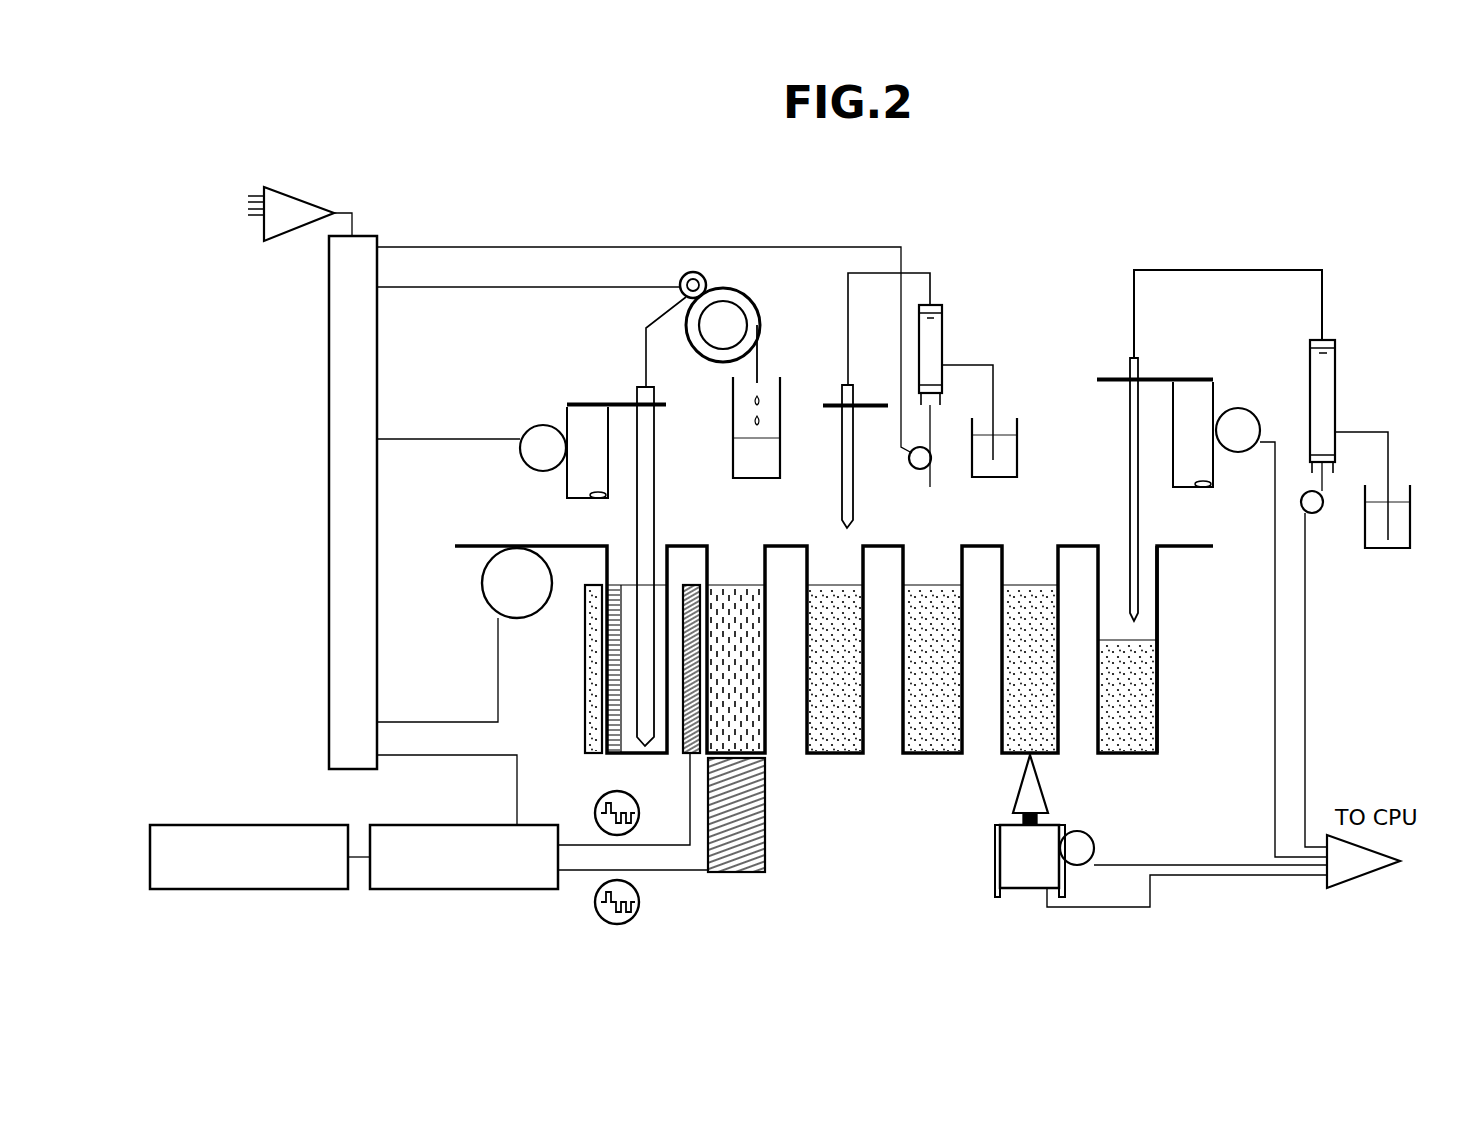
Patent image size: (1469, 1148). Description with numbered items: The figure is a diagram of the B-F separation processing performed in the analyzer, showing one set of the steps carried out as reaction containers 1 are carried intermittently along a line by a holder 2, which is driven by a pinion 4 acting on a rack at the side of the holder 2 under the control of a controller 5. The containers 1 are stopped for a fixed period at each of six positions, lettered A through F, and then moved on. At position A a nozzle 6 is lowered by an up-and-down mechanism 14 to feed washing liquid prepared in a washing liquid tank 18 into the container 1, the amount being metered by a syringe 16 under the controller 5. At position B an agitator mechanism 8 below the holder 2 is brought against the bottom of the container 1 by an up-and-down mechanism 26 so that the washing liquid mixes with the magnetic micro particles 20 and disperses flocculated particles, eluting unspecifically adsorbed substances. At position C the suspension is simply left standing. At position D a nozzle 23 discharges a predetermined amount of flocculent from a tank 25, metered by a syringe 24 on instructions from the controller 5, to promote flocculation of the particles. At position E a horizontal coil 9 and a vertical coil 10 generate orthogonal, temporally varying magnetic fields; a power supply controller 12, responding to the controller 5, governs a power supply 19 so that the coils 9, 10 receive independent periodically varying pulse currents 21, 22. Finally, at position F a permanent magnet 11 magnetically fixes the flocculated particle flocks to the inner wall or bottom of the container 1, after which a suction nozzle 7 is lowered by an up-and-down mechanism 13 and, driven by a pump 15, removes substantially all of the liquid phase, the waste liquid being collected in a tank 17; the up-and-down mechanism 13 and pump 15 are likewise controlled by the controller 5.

The reaction container 1 is at (1160, 611).
The holder 2 is at (1193, 543).
The pinion 4 is at (483, 605).
The controller 5 is at (329, 733).
The nozzle 6 is at (1128, 470).
The suction nozzle 7 is at (663, 521).
The agitator mechanism 8 is at (1044, 787).
The horizontal coil 9 is at (683, 750).
The vertical coil 10 is at (765, 828).
The permanent magnet 11 is at (585, 695).
The power supply controller 12 is at (508, 825).
The up-and-down mechanism 13 is at (521, 463).
The up-and-down mechanism 14 is at (1242, 408).
The pump 15 is at (706, 283).
The syringe 16 is at (1307, 513).
The tank 17 is at (733, 430).
The washing liquid tank 18 is at (1412, 518).
The power supply 19 is at (308, 825).
The magnetic micro particles 20 is at (1136, 695).
The pulse current 21 is at (603, 795).
The pulse current 22 is at (639, 903).
The nozzle 23 is at (842, 470).
The syringe 24 is at (917, 470).
The tank 25 is at (1018, 458).
The up-and-down mechanism 26 is at (1090, 838).